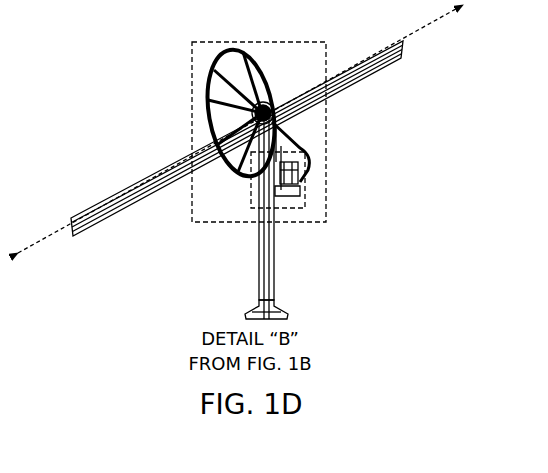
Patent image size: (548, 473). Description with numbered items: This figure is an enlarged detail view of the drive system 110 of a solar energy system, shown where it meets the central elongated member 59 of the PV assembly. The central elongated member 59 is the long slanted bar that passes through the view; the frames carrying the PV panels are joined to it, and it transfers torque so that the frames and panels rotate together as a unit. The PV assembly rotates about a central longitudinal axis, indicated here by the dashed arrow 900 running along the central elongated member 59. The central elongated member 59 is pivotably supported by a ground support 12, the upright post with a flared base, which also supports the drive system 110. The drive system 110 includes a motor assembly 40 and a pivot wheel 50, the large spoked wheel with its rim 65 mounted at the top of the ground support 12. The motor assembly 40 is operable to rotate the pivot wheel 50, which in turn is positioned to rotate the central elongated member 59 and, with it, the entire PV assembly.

The ground support 12 is at (275, 278).
The motor assembly 40 is at (306, 202).
The pivot wheel 50 is at (232, 94).
The central elongated member 59 is at (123, 186).
The wheel rim 65 is at (203, 82).
The drive system 110 is at (330, 143).
The arrow indicating central longitudinal axis 900 is at (433, 23).